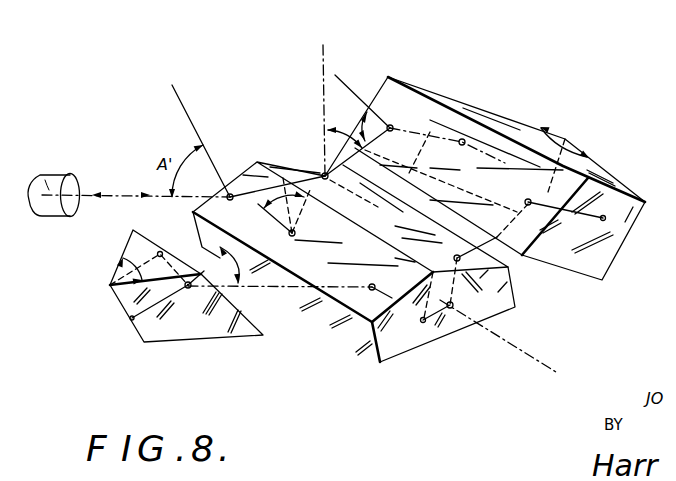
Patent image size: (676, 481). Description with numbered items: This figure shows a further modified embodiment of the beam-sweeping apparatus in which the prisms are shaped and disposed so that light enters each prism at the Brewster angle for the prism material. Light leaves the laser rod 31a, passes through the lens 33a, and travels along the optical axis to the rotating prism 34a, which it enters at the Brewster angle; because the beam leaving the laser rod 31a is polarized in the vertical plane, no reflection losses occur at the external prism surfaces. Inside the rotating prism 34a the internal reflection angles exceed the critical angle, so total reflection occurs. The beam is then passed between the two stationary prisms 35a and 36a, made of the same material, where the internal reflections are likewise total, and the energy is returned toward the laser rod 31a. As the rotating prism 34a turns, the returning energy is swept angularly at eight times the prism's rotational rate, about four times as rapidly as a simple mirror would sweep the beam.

The laser rod 31a is at (48, 170).
The lens 33a is at (70, 190).
The rotating prism 34a is at (403, 357).
The stationary prism 35a is at (509, 113).
The stationary prism 36a is at (200, 343).